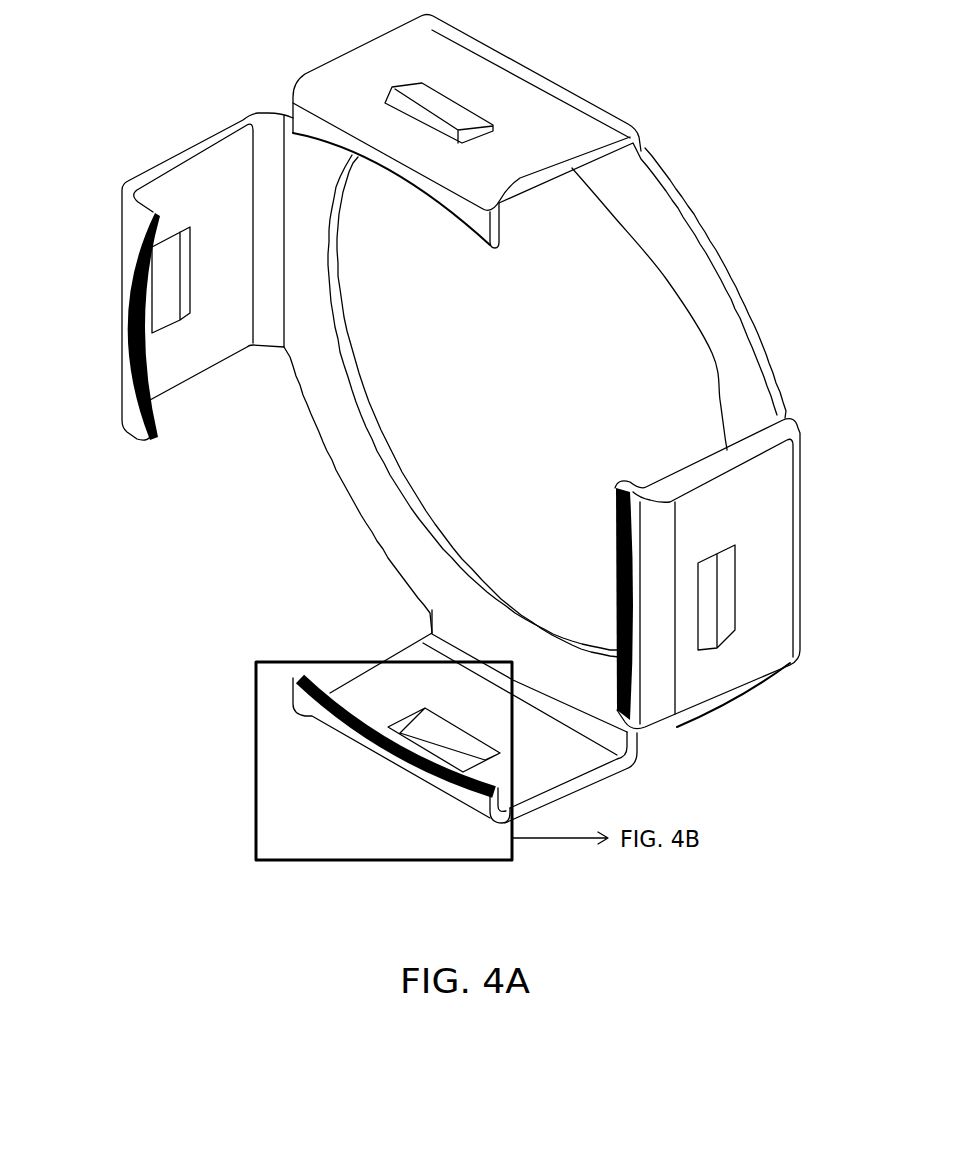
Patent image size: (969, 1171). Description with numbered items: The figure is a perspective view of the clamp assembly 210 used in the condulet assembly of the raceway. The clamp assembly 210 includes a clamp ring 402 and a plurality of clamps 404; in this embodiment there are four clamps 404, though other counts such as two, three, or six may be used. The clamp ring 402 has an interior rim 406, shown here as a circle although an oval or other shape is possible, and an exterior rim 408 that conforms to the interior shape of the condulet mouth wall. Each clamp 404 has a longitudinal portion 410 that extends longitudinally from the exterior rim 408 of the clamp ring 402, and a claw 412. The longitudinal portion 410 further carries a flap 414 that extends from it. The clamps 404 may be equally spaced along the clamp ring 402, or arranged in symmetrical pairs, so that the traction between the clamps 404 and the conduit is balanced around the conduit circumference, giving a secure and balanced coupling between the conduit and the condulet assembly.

The clamp assembly 210 is at (140, 70).
The clamp ring 402 is at (690, 220).
The clamp 404 is at (447, 57).
The interior rim 406 is at (673, 300).
The exterior rim 408 is at (757, 323).
The longitudinal portion 410 is at (567, 123).
The claw 412 is at (497, 227).
The flap 414 is at (450, 113).